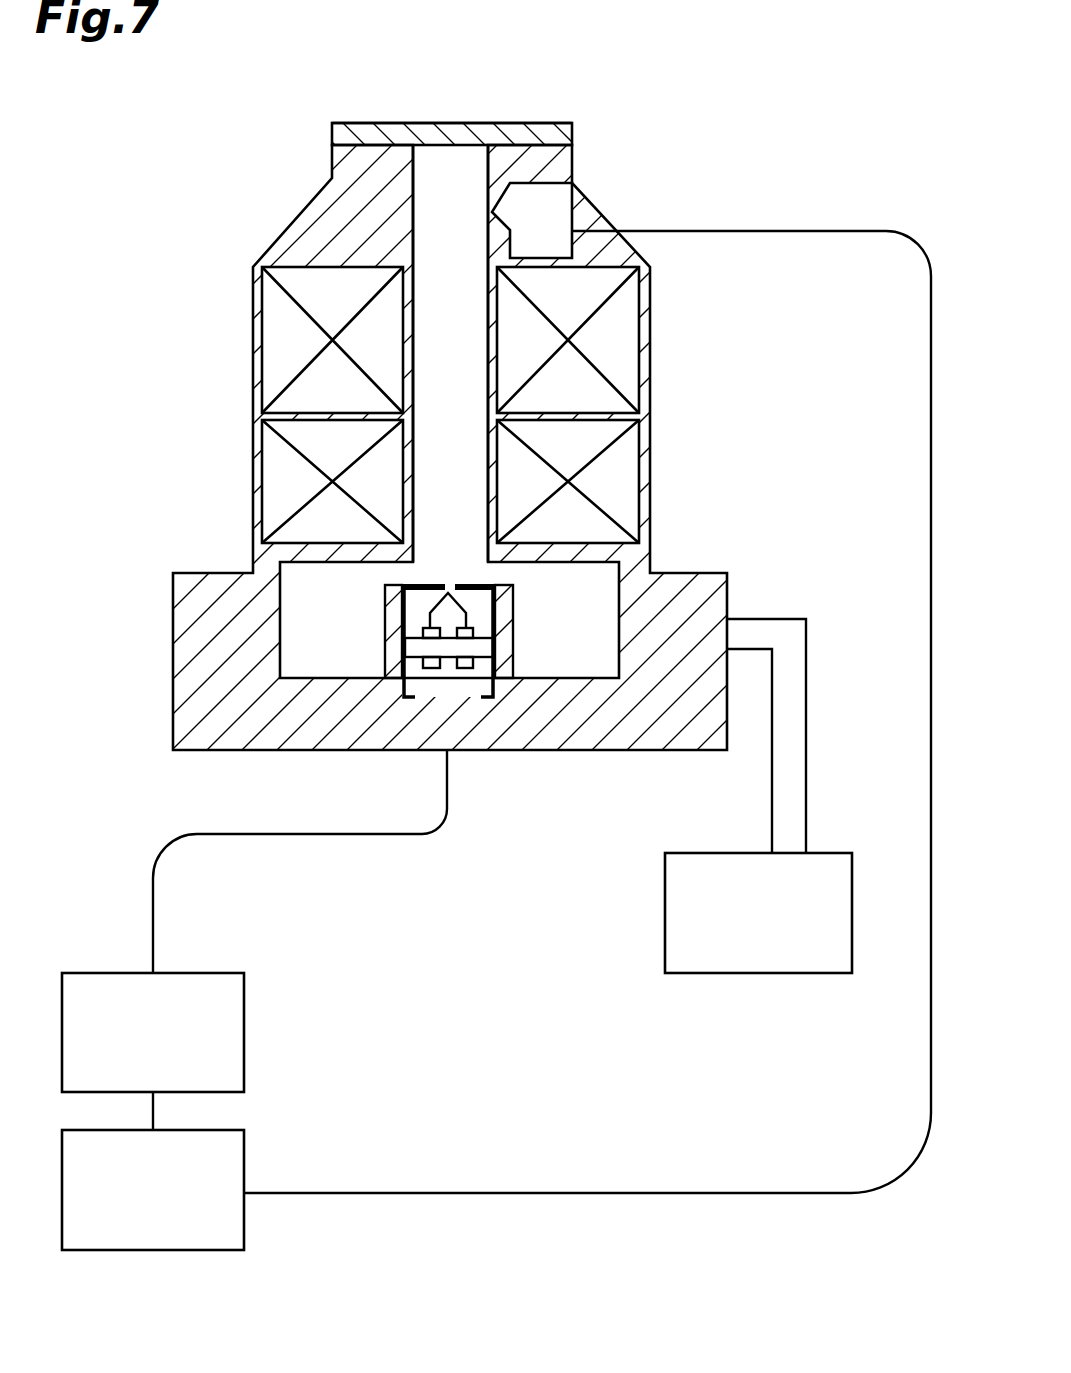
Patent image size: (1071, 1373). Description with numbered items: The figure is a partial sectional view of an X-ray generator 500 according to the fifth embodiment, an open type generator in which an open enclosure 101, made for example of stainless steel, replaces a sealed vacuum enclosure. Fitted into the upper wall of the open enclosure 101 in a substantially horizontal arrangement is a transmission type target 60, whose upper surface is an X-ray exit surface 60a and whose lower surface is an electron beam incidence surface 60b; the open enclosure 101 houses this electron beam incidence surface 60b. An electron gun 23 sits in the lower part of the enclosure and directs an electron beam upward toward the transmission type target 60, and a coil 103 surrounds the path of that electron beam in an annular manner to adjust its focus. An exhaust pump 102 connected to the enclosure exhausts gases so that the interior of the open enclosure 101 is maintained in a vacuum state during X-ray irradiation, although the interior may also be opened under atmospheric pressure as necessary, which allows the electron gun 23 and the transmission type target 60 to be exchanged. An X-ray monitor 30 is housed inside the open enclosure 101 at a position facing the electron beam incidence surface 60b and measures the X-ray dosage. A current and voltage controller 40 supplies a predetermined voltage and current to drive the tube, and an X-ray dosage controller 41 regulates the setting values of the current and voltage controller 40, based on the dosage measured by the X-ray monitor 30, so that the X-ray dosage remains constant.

The electron gun 23 is at (447, 625).
The X-ray monitor 30 is at (563, 190).
The current and voltage controller 40 is at (238, 1036).
The X-ray dosage controller 41 is at (238, 1205).
The transmission type target 60 is at (540, 135).
The X-ray exit surface 60a is at (453, 123).
The electron beam incidence surface 60b is at (440, 147).
The open enclosure 101 is at (684, 573).
The exhaust pump 102 is at (765, 973).
The coil 103 is at (627, 350).
The X-ray generator 500 is at (719, 1275).